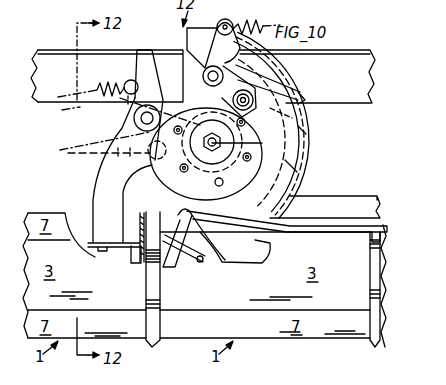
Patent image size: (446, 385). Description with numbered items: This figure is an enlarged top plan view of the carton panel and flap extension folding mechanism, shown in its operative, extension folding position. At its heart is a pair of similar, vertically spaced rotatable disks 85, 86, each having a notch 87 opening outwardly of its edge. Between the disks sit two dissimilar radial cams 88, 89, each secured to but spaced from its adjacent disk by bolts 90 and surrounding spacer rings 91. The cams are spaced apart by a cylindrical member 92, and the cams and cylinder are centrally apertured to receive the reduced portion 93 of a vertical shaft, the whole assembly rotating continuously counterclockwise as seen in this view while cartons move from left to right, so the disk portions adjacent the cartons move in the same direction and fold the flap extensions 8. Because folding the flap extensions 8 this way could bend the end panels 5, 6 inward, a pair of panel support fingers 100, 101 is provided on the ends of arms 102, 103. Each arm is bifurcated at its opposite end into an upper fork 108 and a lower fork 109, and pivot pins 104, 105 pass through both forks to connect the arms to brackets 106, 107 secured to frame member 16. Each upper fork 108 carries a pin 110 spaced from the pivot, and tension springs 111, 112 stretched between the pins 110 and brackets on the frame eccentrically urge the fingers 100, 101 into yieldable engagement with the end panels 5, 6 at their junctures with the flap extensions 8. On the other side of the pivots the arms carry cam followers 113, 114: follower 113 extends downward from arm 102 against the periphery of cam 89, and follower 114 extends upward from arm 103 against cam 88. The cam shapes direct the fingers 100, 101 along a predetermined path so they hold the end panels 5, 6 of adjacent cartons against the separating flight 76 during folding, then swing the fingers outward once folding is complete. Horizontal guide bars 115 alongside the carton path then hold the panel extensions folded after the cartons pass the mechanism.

The end panel 5 is at (156, 270).
The end panel 6 is at (138, 264).
The flap extension 8 is at (140, 227).
The frame member 16 is at (352, 62).
The flight 76 is at (146, 300).
The rotatable disk 85 is at (296, 180).
The rotatable disk 86 is at (301, 140).
The notch 87 is at (197, 268).
The radial cam 88 is at (198, 95).
The radial cam 89 is at (203, 97).
The bolt 90 is at (251, 157).
The spacer ring 91 is at (294, 168).
The cylindrical member 92 is at (283, 122).
The reduced portion 93 is at (306, 131).
The panel support finger 100 is at (128, 248).
The panel support finger 101 is at (196, 266).
The arm 102 is at (100, 178).
The arm 103 is at (240, 260).
The pivot pin 104 is at (134, 118).
The pivot pin 105 is at (240, 78).
The bracket 106 is at (140, 58).
The bracket 107 is at (200, 38).
The upper fork 108 is at (128, 104).
The lower fork 109 is at (125, 128).
The pin 110 is at (127, 83).
The tension spring 111 is at (97, 89).
The tension spring 112 is at (258, 27).
The cam follower 113 is at (97, 155).
The cam follower 114 is at (328, 93).
The guide bar 115 is at (328, 232).